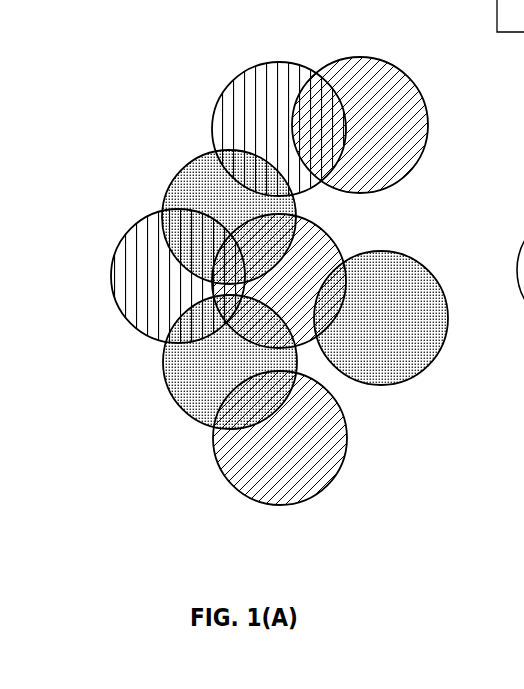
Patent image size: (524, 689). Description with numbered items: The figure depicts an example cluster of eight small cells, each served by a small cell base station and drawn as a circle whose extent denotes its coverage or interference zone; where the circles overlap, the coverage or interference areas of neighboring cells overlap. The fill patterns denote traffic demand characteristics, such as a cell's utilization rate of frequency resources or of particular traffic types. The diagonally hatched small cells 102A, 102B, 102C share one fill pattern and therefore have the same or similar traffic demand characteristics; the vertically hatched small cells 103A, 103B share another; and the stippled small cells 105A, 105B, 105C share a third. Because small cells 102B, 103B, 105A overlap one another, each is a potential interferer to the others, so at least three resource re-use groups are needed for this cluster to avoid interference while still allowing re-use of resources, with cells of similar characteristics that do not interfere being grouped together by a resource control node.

The small cell 102A is at (385, 65).
The small cell 102B is at (327, 233).
The small cell 102C is at (347, 447).
The small cell 103A is at (250, 73).
The small cell 103B is at (123, 238).
The small cell 105A is at (192, 177).
The small cell 105B is at (430, 273).
The small cell 105C is at (187, 413).